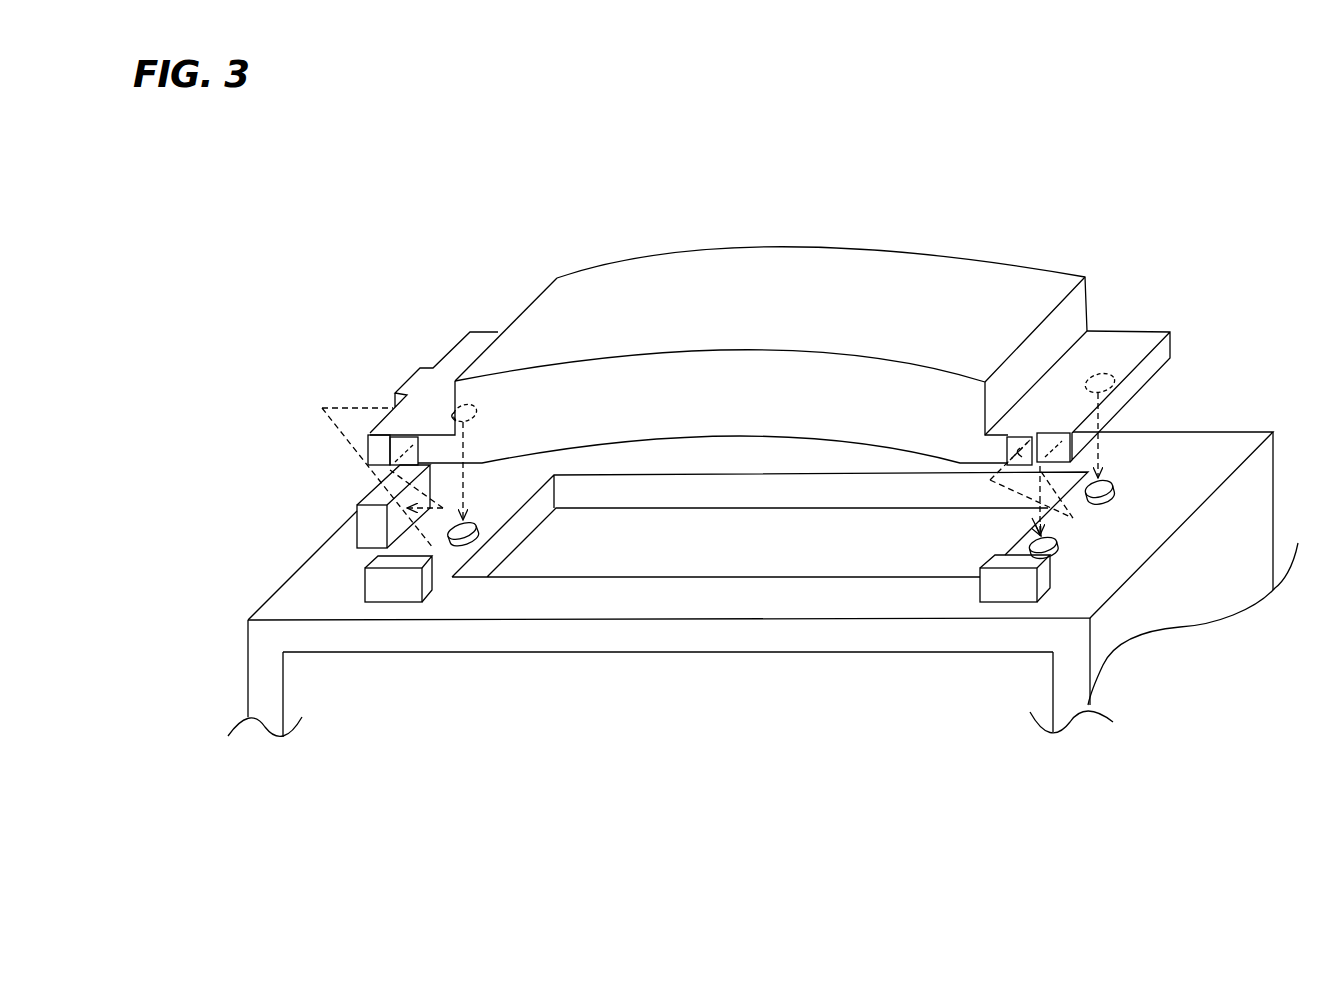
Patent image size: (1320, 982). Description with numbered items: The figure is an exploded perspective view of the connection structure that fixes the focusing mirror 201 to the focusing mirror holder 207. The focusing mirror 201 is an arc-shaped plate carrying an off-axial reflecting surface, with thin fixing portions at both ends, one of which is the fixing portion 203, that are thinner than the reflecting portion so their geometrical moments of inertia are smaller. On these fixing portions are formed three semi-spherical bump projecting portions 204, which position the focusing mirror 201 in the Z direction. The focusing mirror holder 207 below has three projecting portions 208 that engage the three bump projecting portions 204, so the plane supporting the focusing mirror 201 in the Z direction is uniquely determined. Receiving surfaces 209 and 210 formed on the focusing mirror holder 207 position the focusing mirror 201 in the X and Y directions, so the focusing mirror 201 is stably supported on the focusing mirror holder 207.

The focusing mirror 201 is at (1040, 287).
The fixing portion 203 is at (1131, 343).
The semi-spherical bump projecting portions 204 is at (463, 392).
The focusing mirror holder 207 is at (1213, 450).
The projecting portions 208 is at (468, 541).
The receiving surface 209 is at (356, 521).
The receiving surface 210 is at (388, 595).